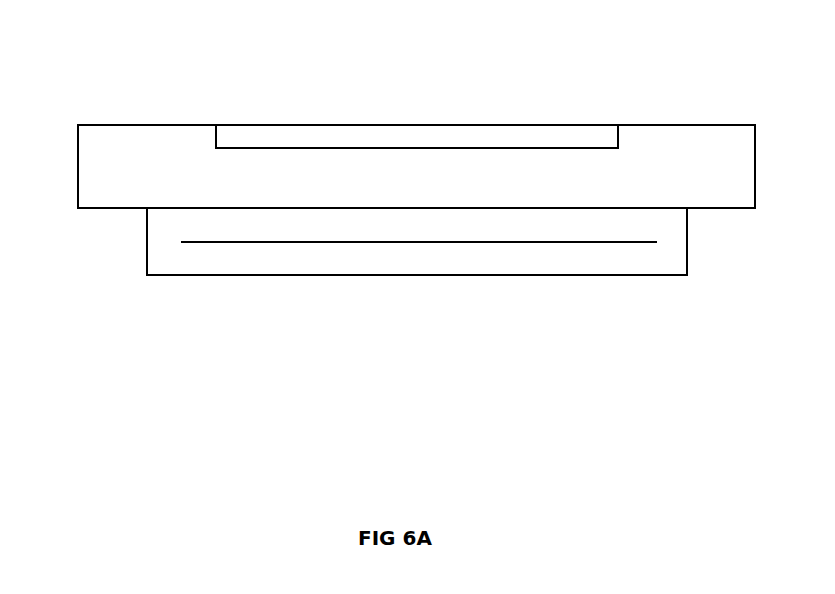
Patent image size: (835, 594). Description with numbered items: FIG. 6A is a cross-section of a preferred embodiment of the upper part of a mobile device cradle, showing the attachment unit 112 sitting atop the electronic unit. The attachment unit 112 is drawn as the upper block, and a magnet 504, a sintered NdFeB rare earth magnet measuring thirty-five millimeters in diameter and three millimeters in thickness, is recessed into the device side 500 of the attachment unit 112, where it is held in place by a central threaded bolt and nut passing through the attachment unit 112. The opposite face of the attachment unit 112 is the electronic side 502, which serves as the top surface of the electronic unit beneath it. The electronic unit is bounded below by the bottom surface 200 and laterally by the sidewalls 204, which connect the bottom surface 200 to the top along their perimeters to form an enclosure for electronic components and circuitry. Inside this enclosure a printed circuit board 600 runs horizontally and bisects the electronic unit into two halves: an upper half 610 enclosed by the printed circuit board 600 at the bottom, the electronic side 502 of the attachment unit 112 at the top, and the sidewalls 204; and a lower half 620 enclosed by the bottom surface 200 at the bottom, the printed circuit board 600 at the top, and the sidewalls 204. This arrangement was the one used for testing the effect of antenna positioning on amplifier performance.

The attachment unit 112 is at (65, 100).
The device side 500 is at (657, 128).
The electronic side 502 is at (668, 207).
The magnet 504 is at (438, 140).
The bottom surface 200 is at (403, 277).
The sidewalls 204 is at (143, 242).
The printed circuit board 600 is at (603, 243).
The upper half 610 is at (185, 217).
The lower half 620 is at (330, 258).